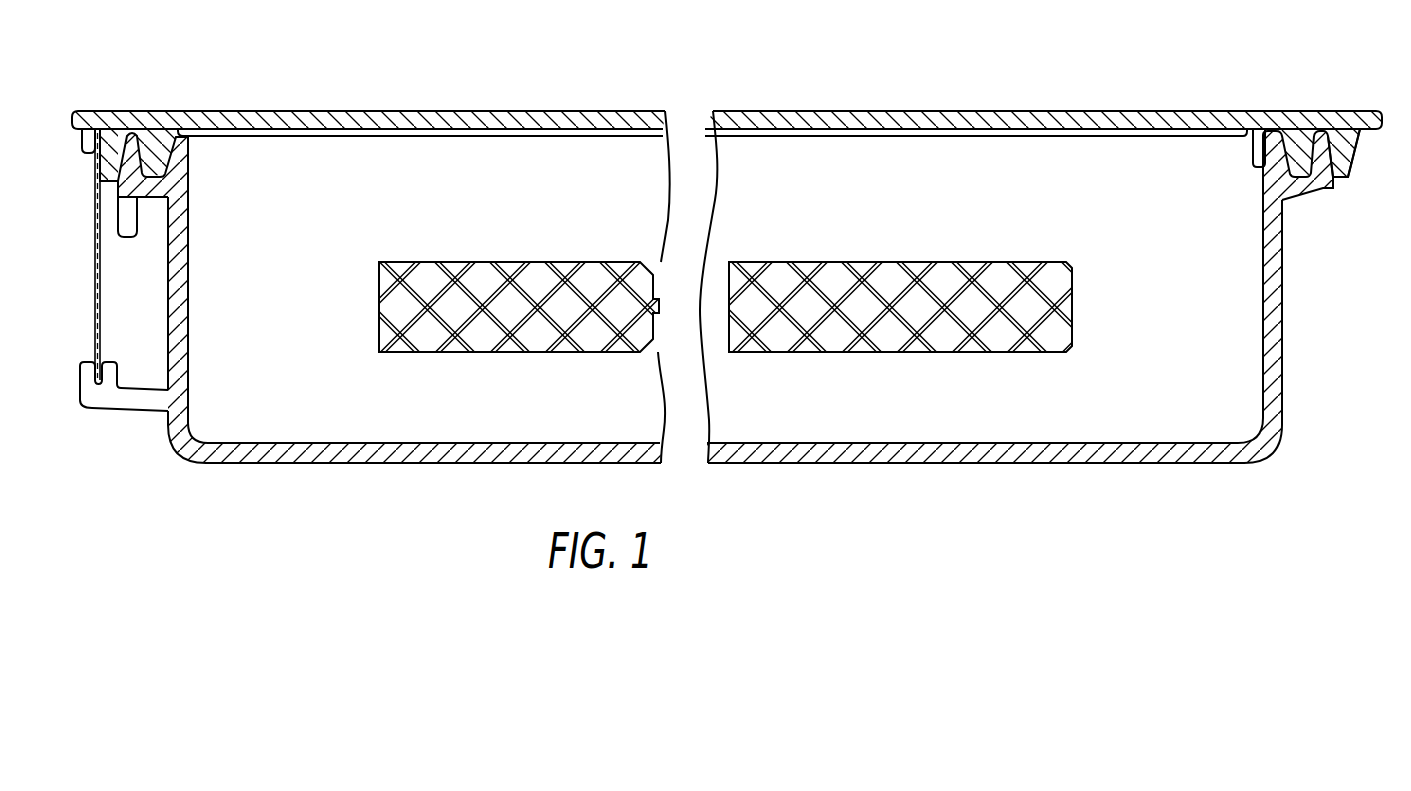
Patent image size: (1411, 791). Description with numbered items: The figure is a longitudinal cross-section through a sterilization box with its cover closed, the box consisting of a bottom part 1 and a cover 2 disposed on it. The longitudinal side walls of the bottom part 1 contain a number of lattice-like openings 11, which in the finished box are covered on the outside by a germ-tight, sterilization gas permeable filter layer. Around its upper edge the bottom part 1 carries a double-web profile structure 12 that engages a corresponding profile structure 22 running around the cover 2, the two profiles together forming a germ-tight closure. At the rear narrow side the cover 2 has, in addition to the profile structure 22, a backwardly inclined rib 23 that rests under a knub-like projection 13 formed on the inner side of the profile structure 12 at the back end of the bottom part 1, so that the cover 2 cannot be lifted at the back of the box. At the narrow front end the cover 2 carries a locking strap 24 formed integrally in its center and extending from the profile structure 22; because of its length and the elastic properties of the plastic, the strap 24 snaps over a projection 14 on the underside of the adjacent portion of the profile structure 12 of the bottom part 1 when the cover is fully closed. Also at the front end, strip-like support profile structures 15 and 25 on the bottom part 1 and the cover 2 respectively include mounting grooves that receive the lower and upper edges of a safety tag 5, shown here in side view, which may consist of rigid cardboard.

The bottom part 1 is at (913, 452).
The cover 2 is at (834, 122).
The safety tag 5 is at (94, 302).
The lattice-like openings 11 is at (606, 362).
The double-web profile structure 12 is at (1302, 186).
The knub-like projection 13 is at (1266, 130).
The projection 14 is at (130, 210).
The support profile structure 15 is at (120, 399).
The profile structure 22 is at (1355, 155).
The backwardly inclined rib 23 is at (1252, 148).
The locking strap 24 is at (116, 240).
The support profile structure 25 is at (82, 143).